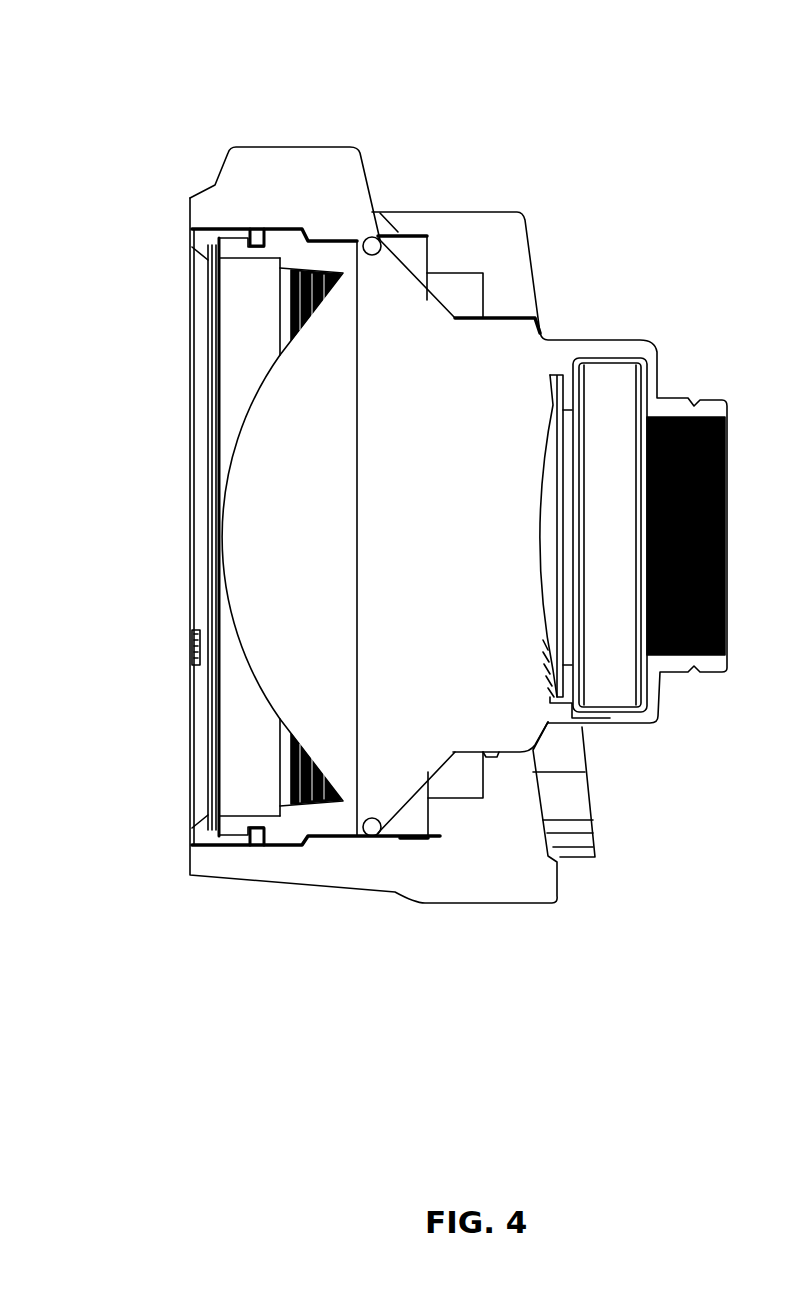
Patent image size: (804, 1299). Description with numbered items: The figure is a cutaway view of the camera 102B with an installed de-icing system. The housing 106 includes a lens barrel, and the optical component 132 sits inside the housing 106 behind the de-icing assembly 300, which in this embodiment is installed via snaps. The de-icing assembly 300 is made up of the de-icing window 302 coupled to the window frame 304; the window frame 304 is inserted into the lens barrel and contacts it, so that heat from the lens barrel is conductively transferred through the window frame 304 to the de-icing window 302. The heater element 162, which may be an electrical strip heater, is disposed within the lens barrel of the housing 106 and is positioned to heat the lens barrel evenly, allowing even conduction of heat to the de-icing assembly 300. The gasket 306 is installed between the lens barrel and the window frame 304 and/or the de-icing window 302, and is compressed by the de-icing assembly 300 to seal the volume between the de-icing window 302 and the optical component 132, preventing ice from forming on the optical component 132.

The camera 102B is at (120, 135).
The housing 106 is at (365, 168).
The heater element 162 is at (437, 305).
The optical component 132 is at (248, 678).
The de-icing assembly 300 is at (192, 252).
The de-icing window 302 is at (210, 430).
The window frame 304 is at (230, 227).
The gasket 306 is at (259, 232).